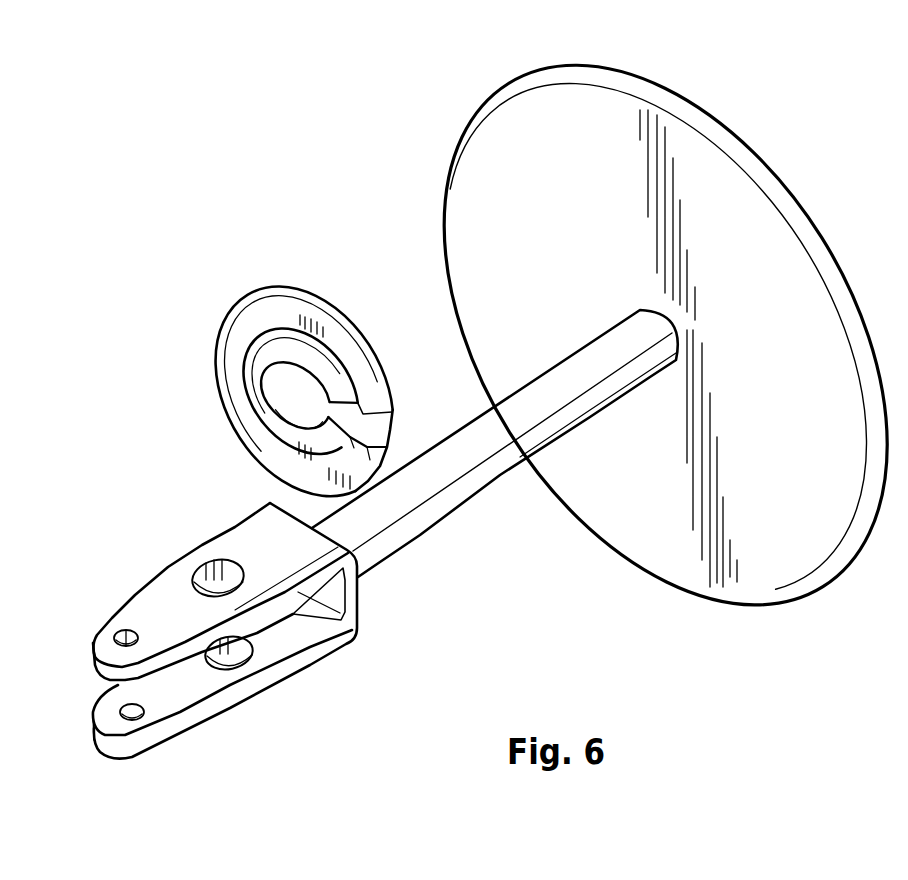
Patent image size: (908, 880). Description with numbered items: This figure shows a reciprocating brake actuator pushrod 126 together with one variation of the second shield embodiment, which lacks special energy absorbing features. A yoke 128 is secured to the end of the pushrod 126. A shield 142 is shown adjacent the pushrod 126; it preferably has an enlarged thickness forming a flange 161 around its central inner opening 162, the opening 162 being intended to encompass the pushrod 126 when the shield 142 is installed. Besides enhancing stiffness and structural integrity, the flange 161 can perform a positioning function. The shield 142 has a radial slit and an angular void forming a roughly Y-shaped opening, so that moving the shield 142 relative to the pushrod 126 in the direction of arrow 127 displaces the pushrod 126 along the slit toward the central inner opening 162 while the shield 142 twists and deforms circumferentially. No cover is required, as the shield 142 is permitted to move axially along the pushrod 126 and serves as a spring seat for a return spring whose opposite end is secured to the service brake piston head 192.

The service brake piston head 192 is at (728, 128).
The brake actuator pushrod 126 is at (442, 520).
The arrow 127 is at (426, 451).
The shield 142 is at (251, 349).
The flange 161 is at (260, 353).
The central inner opening 162 is at (320, 392).
The yoke 128 is at (251, 698).